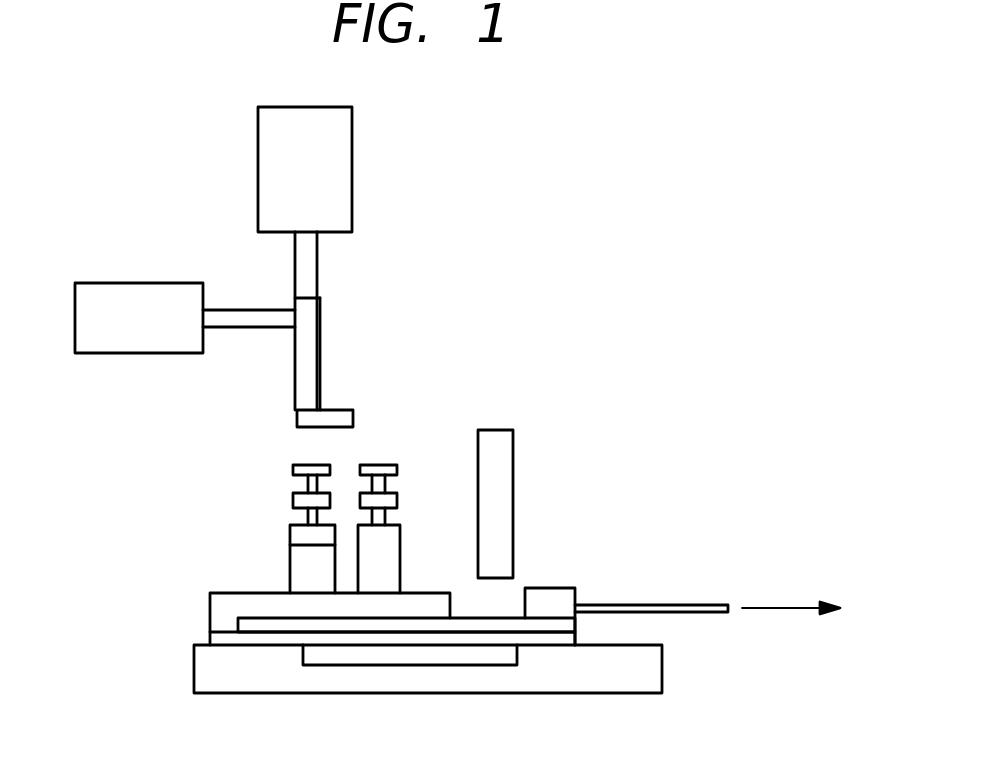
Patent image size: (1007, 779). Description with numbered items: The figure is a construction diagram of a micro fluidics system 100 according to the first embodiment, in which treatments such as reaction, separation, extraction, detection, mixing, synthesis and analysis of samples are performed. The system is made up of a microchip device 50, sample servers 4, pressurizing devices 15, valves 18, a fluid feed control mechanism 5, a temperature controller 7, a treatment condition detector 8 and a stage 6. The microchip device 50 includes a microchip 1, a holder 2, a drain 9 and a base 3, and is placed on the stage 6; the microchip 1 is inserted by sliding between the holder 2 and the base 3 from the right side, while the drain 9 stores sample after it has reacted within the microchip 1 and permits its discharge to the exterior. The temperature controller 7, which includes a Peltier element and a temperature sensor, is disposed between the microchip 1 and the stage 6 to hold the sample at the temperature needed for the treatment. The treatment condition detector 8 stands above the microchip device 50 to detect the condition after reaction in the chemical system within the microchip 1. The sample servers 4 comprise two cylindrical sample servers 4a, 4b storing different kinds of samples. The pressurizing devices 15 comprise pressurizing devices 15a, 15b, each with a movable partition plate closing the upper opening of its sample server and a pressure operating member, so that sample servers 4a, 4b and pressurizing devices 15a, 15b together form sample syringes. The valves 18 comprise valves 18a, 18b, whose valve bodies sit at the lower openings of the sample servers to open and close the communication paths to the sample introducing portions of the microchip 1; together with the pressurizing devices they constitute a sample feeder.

The micro fluidics system 100 is at (487, 241).
The microchip 1 is at (568, 625).
The holder 2 is at (210, 607).
The base 3 is at (237, 638).
The sample servers 4 is at (157, 488).
The sample server 4a is at (290, 540).
The sample server 4b is at (290, 566).
The fluid feed control mechanism 5 is at (350, 410).
The stage 6 is at (662, 663).
The temperature controller 7 is at (363, 660).
The treatment condition detector 8 is at (513, 462).
The drain 9 is at (578, 592).
The pressurizing devices 15 is at (157, 385).
The pressurizing device 15a is at (300, 490).
The pressurizing device 15b is at (293, 505).
The valves 18 is at (527, 330).
The valve 18a is at (388, 465).
The valve 18b is at (320, 463).
The microchip device 50 is at (197, 629).